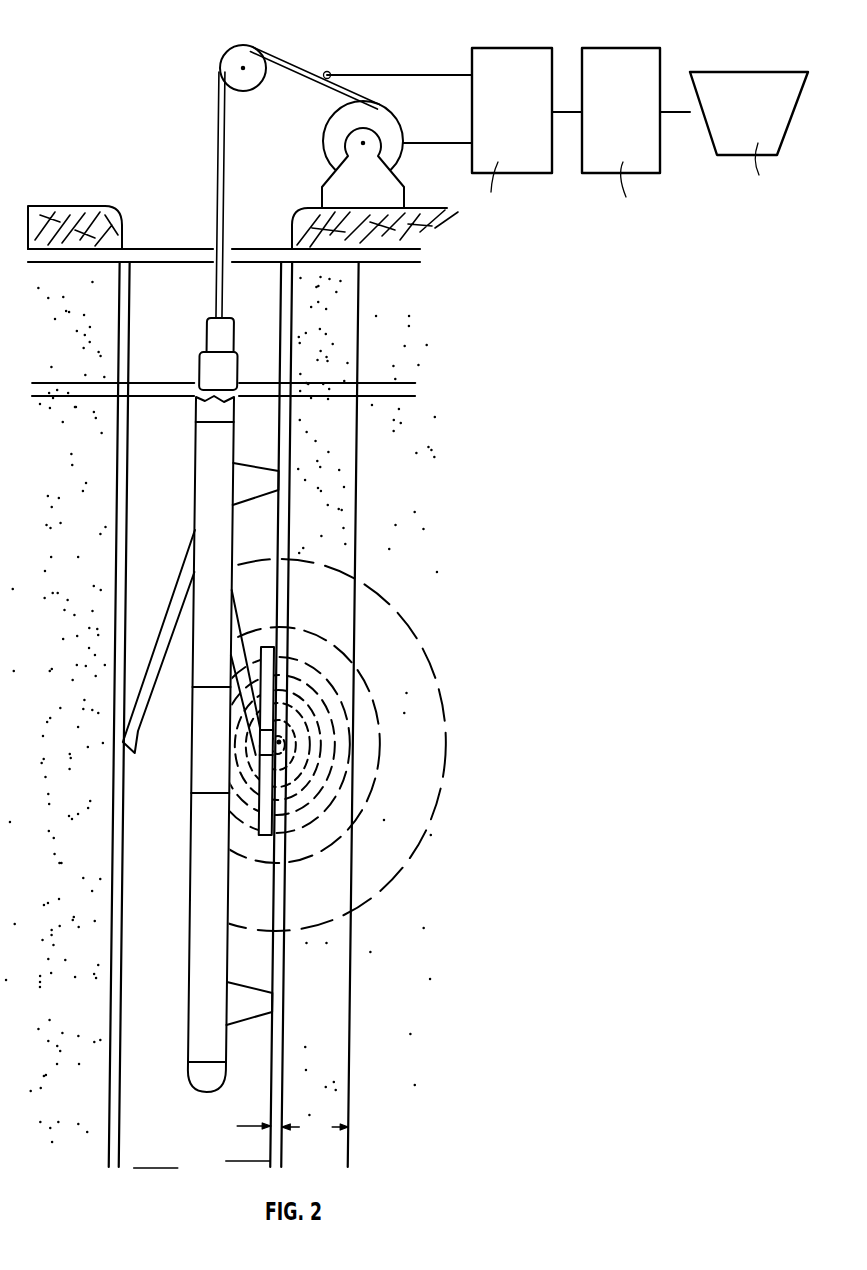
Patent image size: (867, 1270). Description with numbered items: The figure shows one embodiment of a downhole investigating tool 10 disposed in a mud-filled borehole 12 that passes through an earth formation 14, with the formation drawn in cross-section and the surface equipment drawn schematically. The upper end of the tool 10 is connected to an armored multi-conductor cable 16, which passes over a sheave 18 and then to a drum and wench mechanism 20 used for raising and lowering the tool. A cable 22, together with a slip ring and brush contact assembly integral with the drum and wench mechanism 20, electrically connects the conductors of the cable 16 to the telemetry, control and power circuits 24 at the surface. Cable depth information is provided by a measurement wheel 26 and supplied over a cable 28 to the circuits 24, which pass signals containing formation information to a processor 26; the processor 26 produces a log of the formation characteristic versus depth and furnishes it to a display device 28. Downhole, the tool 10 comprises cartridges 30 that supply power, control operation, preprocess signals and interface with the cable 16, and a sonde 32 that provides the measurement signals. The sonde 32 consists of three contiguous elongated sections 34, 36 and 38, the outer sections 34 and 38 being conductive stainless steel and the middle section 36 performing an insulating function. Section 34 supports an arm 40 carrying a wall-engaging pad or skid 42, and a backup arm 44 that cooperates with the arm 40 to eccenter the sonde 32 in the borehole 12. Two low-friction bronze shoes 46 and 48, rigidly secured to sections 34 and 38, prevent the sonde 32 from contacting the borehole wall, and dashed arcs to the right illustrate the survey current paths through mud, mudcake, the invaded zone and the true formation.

The downhole investigating tool 10 is at (200, 688).
The borehole 12 is at (183, 244).
The earth formation 14 is at (92, 474).
The armored multi-conductor cable 16 is at (215, 118).
The sheave 18 is at (219, 66).
The drum and wench mechanism 20 is at (373, 186).
The cable 22 is at (447, 141).
The telemetry, control and power circuits 24 is at (483, 48).
The processor 26 is at (327, 71).
The display device 28 is at (399, 72).
The cartridges 30 is at (228, 382).
The sonde 32 is at (190, 437).
The sonde section 34 is at (225, 476).
The sonde section 36 is at (226, 751).
The sonde section 38 is at (226, 899).
The arm 40 is at (262, 738).
The wall-engaging pad or skid 42 is at (264, 828).
The backup arm 44 is at (170, 608).
The friction shoe 46 is at (263, 499).
The friction shoe 48 is at (264, 1016).